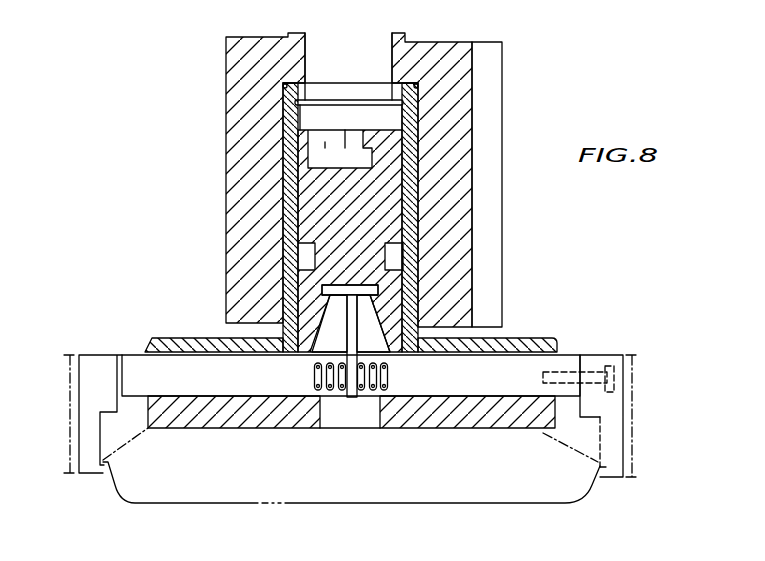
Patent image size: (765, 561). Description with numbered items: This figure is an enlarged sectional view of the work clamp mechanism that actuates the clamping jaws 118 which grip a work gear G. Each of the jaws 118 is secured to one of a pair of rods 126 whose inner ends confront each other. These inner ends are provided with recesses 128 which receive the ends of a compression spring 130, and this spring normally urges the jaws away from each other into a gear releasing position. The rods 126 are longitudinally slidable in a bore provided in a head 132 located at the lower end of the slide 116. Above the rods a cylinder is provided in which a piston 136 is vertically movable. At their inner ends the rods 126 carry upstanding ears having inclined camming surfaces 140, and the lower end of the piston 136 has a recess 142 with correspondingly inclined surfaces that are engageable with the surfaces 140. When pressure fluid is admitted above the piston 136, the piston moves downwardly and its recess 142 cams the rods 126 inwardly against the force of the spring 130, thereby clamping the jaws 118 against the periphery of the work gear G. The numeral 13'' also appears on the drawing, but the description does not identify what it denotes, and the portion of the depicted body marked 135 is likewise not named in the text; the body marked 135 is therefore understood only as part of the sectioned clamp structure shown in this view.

The slide 116 is at (226, 92).
The housing section 13'' is at (447, 180).
The piston 136 is at (362, 209).
The pin 135 is at (365, 320).
The recess 142 is at (322, 319).
The inclined camming surfaces 140 is at (378, 319).
The head 132 is at (198, 337).
The rods 126 is at (521, 372).
The compression spring 130 is at (315, 380).
The recesses 128 is at (388, 378).
The clamping jaws 118 is at (80, 428).
The work gear G is at (583, 502).